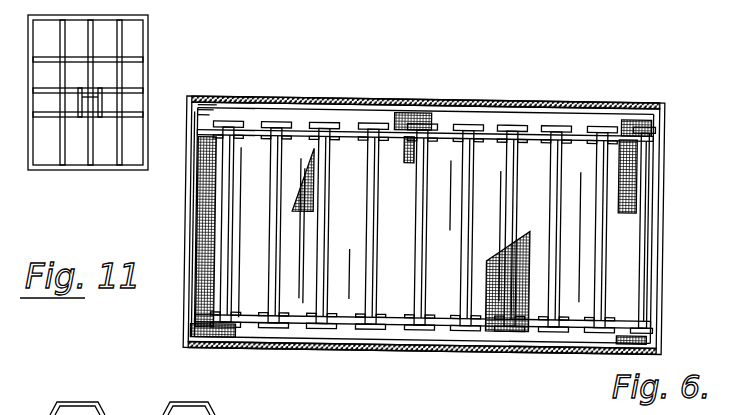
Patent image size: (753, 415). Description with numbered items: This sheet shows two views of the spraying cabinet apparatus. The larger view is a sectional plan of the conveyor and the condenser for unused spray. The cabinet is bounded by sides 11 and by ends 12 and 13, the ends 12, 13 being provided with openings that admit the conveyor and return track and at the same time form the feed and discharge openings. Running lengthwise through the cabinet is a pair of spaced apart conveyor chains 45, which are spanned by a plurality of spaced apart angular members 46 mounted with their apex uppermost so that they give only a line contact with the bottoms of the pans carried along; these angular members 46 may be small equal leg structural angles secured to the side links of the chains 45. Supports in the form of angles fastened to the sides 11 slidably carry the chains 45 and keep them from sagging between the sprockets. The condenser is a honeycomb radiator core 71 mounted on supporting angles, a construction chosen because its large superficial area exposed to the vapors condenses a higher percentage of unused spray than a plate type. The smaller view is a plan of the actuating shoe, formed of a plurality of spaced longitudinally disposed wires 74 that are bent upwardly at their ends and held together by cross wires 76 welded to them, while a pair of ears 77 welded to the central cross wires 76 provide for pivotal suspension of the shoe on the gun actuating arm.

In FIG. 6, the sides 11 is at (398, 100).
In FIG. 6, the end 12 is at (663, 214).
In FIG. 6, the end 13 is at (186, 232).
In FIG. 6, the conveyor chains 45 is at (248, 134).
In FIG. 6, the angular members 46 is at (222, 206).
In FIG. 6, the honeycomb radiator core 71 is at (244, 324).
In FIG. 11, the wires 74 is at (148, 80).
In FIG. 11, the cross wires 76 is at (148, 17).
In FIG. 11, the ears 77 is at (75, 104).